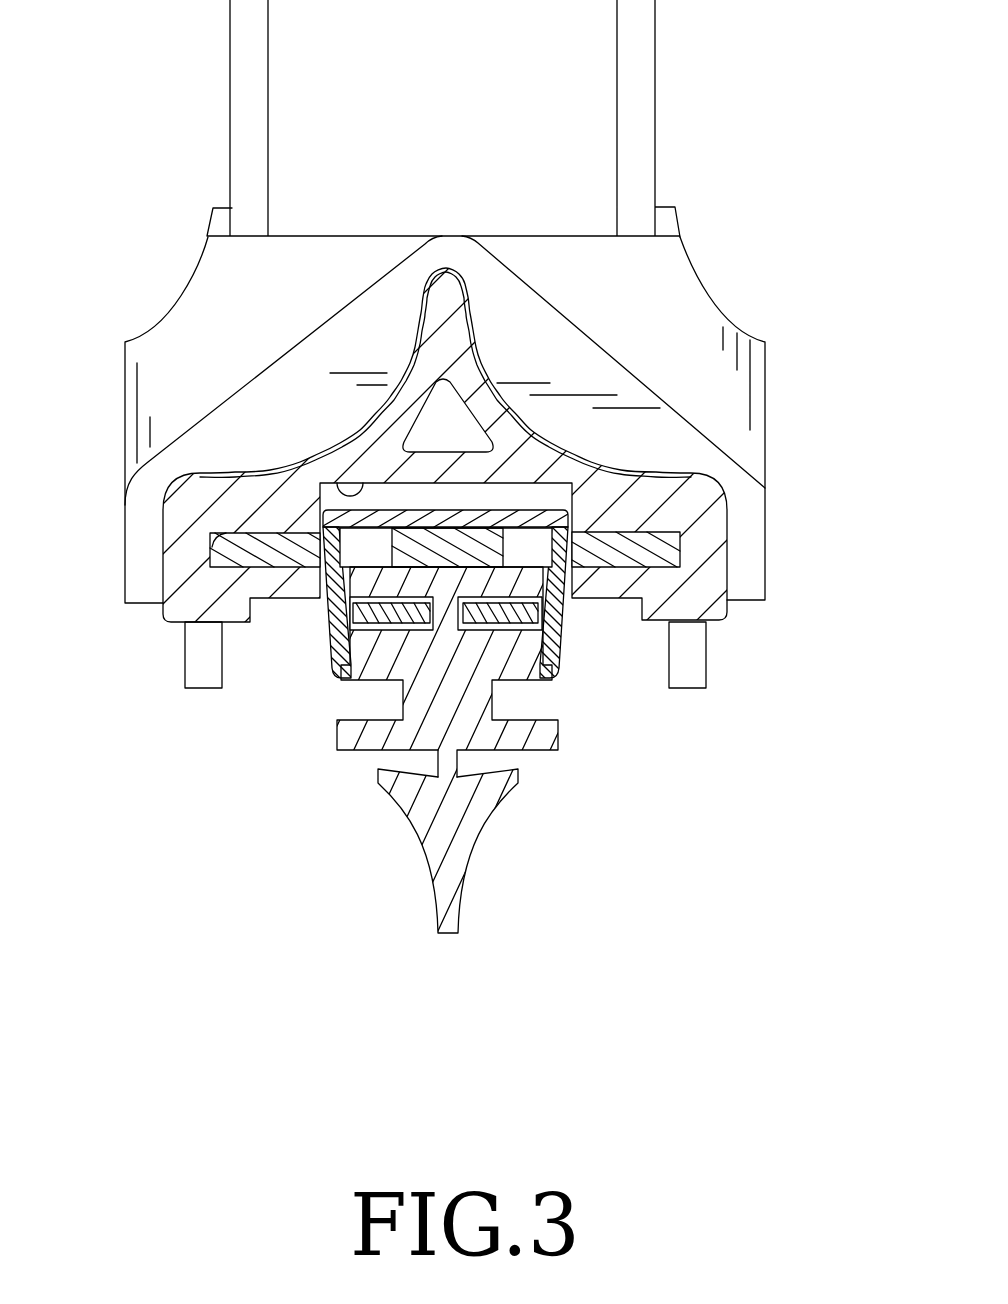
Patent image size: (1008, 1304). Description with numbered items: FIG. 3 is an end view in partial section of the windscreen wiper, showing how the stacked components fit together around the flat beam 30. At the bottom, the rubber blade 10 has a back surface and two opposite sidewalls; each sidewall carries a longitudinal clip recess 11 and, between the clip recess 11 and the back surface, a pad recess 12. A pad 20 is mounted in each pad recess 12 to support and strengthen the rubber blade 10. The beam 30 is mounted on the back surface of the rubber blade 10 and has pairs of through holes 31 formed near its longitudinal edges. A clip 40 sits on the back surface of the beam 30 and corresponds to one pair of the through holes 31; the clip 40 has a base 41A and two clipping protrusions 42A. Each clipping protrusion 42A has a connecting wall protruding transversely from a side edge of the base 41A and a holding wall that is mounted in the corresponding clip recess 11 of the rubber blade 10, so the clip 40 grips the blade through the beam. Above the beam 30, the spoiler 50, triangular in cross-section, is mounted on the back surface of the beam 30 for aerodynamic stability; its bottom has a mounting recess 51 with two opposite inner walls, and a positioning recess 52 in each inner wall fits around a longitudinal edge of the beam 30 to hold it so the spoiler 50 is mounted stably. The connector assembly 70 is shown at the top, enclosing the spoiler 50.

The rubber blade 10 is at (487, 760).
The clip recess 11 is at (520, 714).
The pad recess 12 is at (530, 624).
The pad 20 is at (342, 660).
The beam 30 is at (613, 500).
The through hole 31 is at (367, 552).
The clip 40 is at (570, 690).
The base 41A is at (545, 487).
The clipping protrusion 42A is at (380, 622).
The spoiler 50 is at (200, 500).
The mounting recess 51 is at (337, 487).
The positioning recess 52 is at (207, 550).
The connector assembly 70 is at (665, 290).